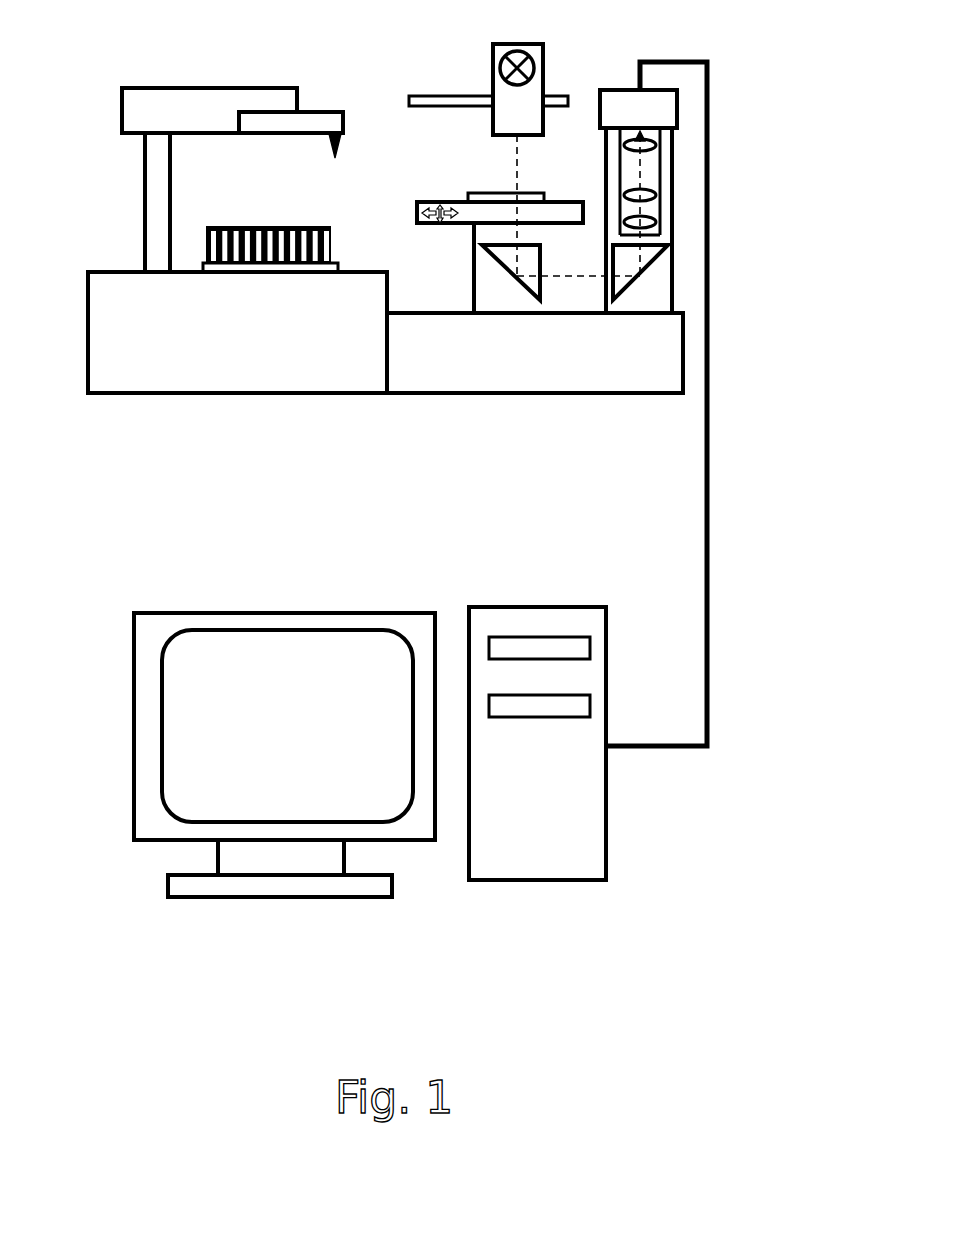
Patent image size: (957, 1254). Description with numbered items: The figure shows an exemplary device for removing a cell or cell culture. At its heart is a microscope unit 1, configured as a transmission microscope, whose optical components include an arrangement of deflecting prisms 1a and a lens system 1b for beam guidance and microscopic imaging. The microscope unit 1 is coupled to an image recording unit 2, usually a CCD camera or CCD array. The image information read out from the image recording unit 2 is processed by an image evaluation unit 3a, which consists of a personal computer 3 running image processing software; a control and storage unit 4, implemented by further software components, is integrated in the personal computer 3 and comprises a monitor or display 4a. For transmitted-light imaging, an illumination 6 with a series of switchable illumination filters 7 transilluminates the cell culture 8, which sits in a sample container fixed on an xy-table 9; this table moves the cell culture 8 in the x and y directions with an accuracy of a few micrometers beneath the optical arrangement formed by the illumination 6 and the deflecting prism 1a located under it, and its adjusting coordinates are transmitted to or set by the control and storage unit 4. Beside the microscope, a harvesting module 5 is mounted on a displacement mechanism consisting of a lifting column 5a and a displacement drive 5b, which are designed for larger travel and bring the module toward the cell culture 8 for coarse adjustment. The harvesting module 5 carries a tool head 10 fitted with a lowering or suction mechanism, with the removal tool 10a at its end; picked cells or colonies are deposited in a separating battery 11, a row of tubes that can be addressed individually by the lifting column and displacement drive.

The microscope unit 1 is at (590, 196).
The deflecting prisms 1a is at (528, 292).
The lens system 1b is at (658, 192).
The image recording unit 2 is at (629, 105).
The personal computer 3 is at (420, 543).
The image evaluation unit 3a is at (555, 618).
The control and storage unit 4 is at (397, 747).
The display 4a is at (287, 726).
The harvesting module 5 is at (211, 78).
The lifting column 5a is at (152, 197).
The displacement drive 5b is at (237, 332).
The illumination 6 is at (515, 44).
The switchable illumination filters 7 is at (441, 96).
The cell culture 8 is at (480, 192).
The xy-table 9 is at (418, 200).
The tool head 10 is at (314, 118).
The removal tool 10a is at (343, 138).
The separating battery 11 is at (272, 225).